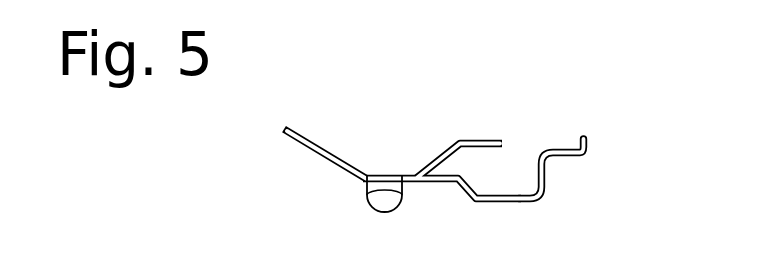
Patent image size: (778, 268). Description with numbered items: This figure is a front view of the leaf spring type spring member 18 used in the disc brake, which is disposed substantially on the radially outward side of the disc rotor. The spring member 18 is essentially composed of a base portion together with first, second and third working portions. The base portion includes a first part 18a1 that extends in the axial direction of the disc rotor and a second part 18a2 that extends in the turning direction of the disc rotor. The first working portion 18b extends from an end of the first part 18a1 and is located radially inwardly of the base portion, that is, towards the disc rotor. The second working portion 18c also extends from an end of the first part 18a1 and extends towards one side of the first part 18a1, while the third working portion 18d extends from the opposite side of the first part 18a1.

The spring member 18 is at (458, 154).
The first part 18a1 is at (365, 188).
The second part 18a2 is at (545, 191).
The first working portion 18b is at (386, 202).
The second working portion 18c is at (477, 141).
The third working portion 18d is at (311, 141).